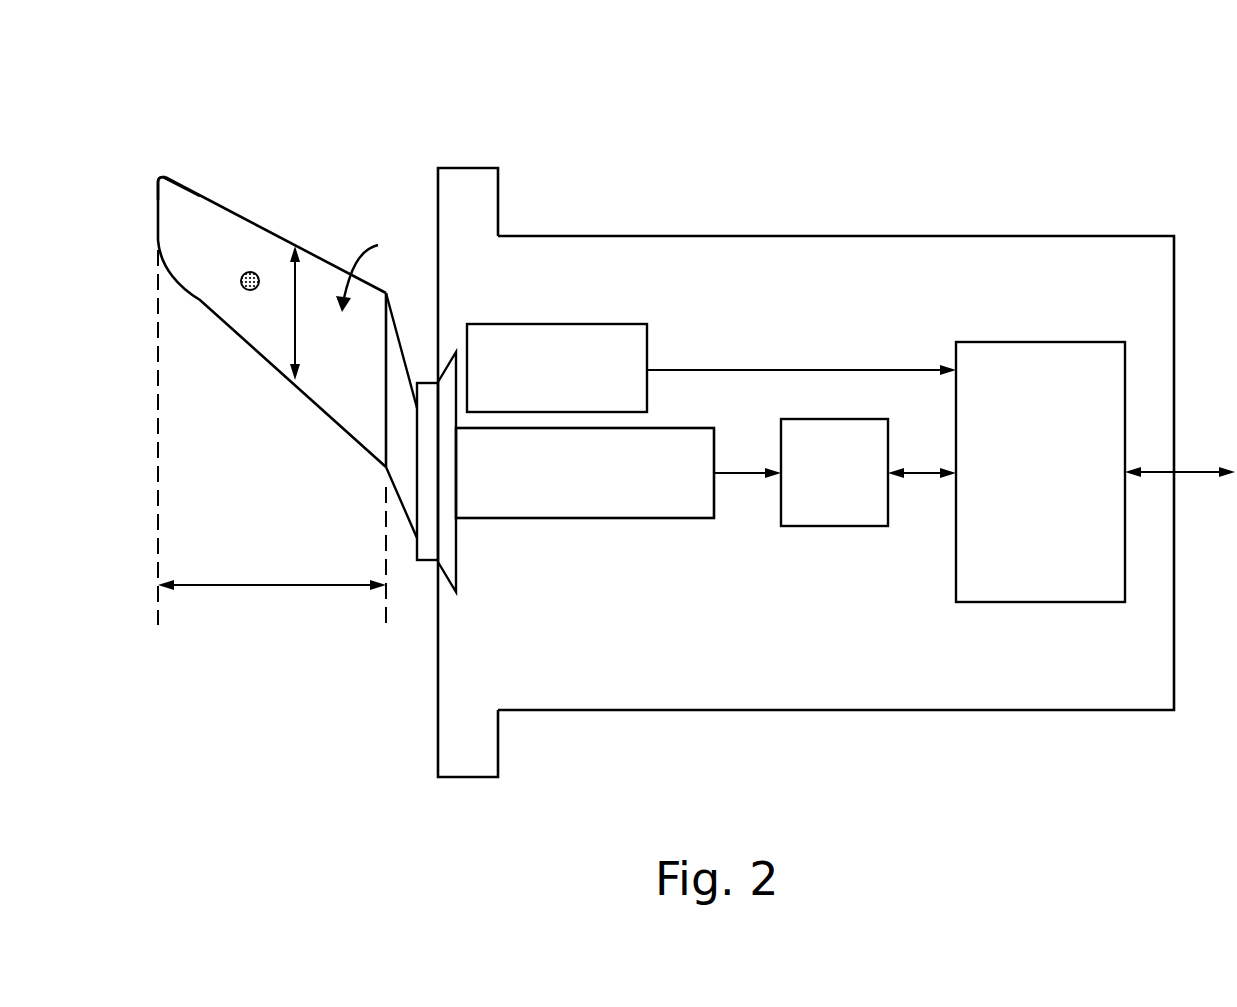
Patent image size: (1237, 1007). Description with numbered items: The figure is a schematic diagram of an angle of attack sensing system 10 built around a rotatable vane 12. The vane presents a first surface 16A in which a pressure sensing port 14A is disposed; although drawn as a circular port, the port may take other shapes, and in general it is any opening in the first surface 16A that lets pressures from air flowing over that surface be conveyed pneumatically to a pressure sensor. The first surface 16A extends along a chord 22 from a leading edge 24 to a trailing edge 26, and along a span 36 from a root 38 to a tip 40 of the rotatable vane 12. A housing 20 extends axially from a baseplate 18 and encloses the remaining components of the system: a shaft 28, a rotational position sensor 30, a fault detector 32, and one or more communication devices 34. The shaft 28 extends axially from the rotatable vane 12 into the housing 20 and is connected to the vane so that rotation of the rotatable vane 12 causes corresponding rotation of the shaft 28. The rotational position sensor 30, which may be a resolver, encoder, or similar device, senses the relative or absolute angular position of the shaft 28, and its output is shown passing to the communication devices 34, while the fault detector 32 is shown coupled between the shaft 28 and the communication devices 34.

The angle of attack sensing system 10 is at (770, 126).
The rotatable vane 12 is at (232, 306).
The pressure sensing port 14A is at (250, 271).
The first surface 16A is at (375, 274).
The baseplate 18 is at (470, 168).
The housing 20 is at (913, 235).
The chord 22 is at (296, 286).
The leading edge 24 is at (233, 334).
The trailing edge 26 is at (210, 197).
The shaft 28 is at (612, 518).
The rotational position sensor 30 is at (711, 368).
The fault detector 32 is at (835, 472).
The communication device(s) 34 is at (1095, 472).
The span 36 is at (257, 587).
The root 38 is at (385, 475).
The tip 40 is at (157, 213).